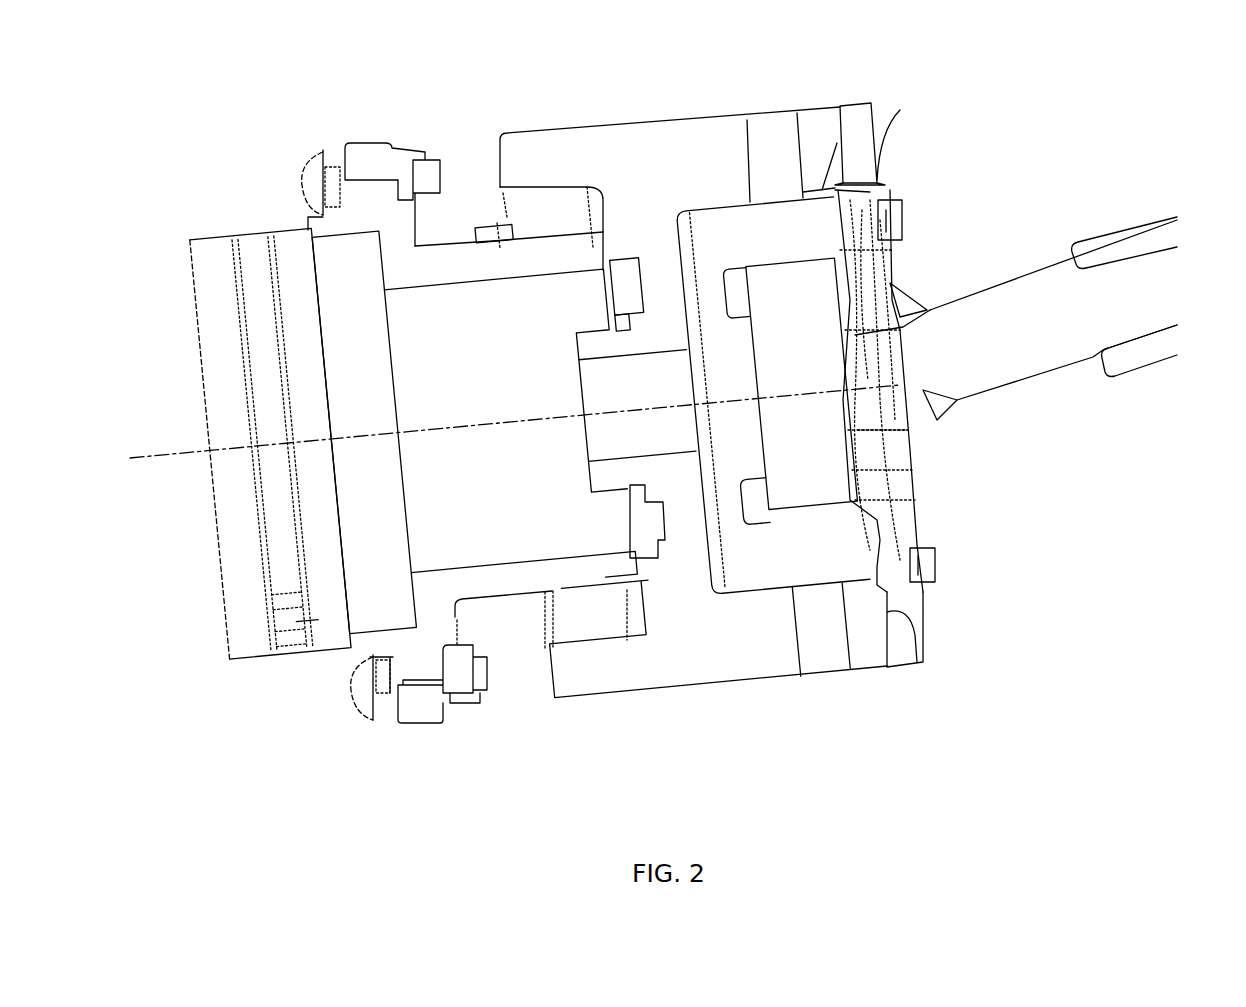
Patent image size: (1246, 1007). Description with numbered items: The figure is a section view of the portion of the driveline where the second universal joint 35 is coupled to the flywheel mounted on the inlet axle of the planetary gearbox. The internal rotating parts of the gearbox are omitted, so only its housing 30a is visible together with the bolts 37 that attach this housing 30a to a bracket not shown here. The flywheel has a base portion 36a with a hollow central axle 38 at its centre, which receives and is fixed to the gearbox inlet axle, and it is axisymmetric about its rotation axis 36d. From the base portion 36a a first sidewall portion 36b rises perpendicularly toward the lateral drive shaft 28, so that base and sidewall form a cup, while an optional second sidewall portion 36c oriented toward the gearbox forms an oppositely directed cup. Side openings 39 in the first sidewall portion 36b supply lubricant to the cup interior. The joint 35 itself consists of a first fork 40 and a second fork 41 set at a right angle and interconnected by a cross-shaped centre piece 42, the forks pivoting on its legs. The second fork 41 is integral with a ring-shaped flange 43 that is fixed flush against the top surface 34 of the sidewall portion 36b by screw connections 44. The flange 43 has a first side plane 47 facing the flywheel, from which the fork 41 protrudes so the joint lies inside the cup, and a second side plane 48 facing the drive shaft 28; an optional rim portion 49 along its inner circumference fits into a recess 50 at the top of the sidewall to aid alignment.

The lateral drive shaft 28 is at (1123, 307).
The housing 30a is at (478, 246).
The top surface 34 is at (913, 622).
The second universal joint 35 is at (935, 283).
The base portion 36a is at (646, 247).
The first sidewall portion 36b is at (698, 175).
The second sidewall portion 36c is at (532, 172).
The rotation axis 36d is at (185, 455).
The bolts 37 is at (309, 177).
The hollow central axle 38 is at (627, 423).
The side openings 39 is at (818, 645).
The first fork 40 is at (822, 401).
The second fork 41 is at (945, 277).
The cross-shaped centre piece 42 is at (820, 403).
The ring-shaped flange 43 is at (858, 125).
The screw connections 44 is at (900, 223).
The first side plane 47 is at (837, 143).
The second side plane 48 is at (877, 178).
The rim portion 49 is at (870, 192).
The recess 50 is at (835, 188).